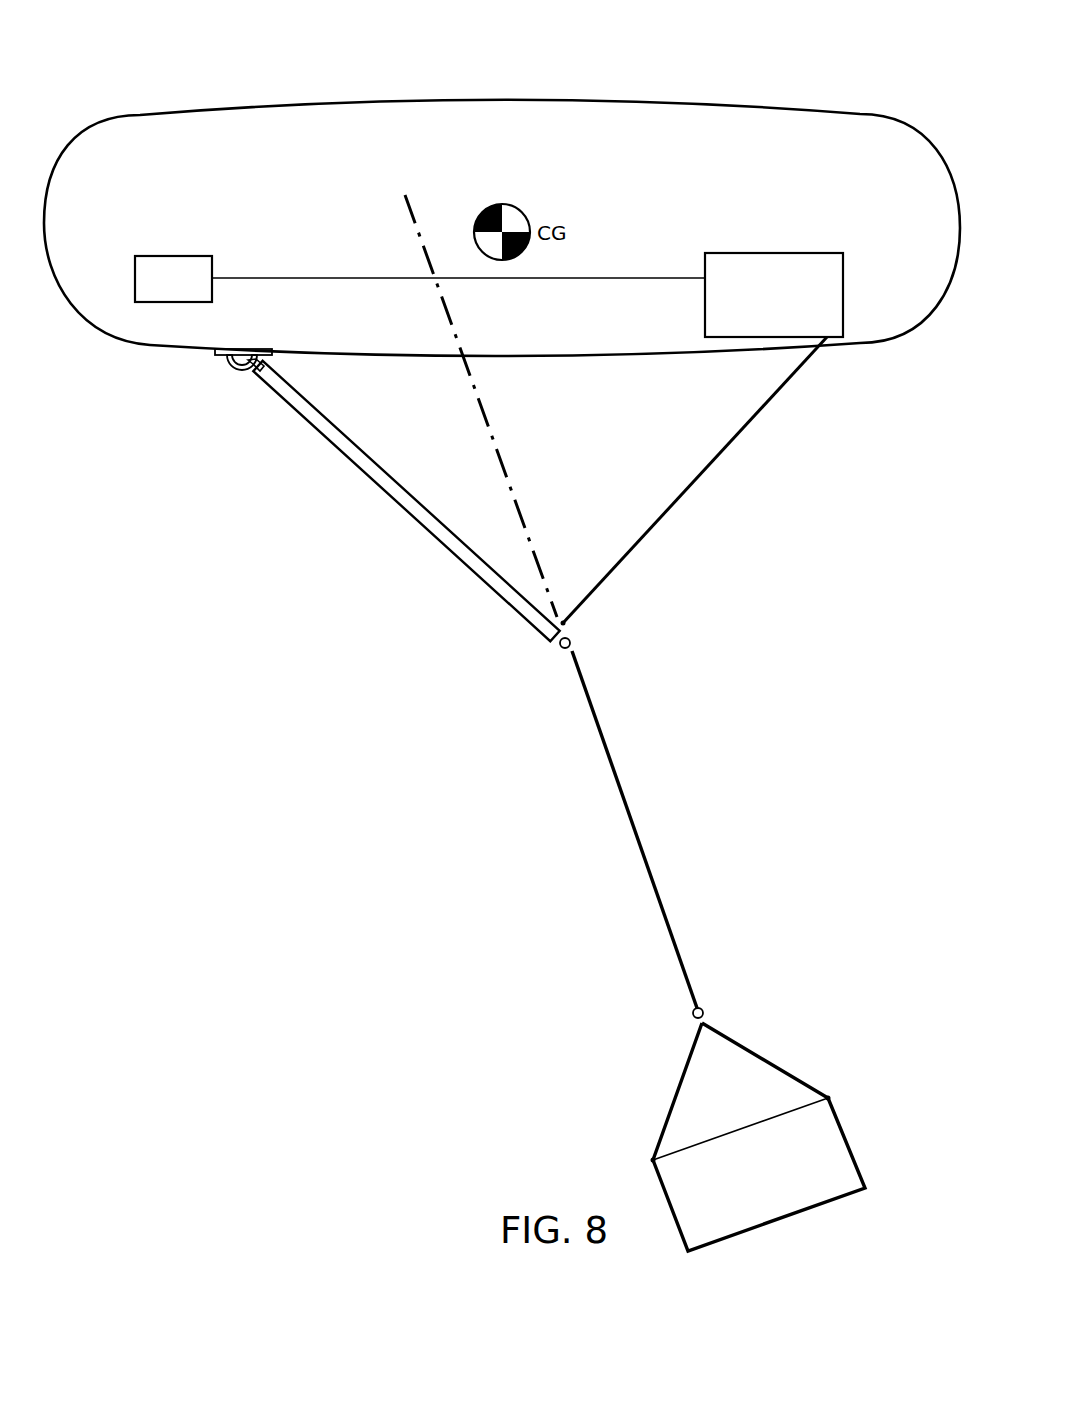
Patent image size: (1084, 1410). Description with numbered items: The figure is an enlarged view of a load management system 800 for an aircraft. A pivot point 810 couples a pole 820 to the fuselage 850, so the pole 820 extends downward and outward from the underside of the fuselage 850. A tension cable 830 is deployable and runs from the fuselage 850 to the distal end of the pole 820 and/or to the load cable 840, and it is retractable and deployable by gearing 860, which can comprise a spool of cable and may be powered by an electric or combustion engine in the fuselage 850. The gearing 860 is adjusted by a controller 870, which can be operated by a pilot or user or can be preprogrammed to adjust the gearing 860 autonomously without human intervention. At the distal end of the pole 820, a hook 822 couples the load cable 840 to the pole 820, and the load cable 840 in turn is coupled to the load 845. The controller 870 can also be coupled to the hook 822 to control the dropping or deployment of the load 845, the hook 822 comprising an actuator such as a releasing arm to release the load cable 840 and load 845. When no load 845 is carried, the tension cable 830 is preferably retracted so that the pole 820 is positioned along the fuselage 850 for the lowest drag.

The load management system 800 is at (282, 68).
The fuselage 850 is at (698, 103).
The controller 870 is at (172, 256).
The gearing 860 is at (775, 253).
The pivot point 810 is at (228, 362).
The pole 820 is at (405, 513).
The tension cable 830 is at (694, 488).
The hook 822 is at (572, 646).
The load cable 840 is at (630, 830).
The load 845 is at (848, 1142).